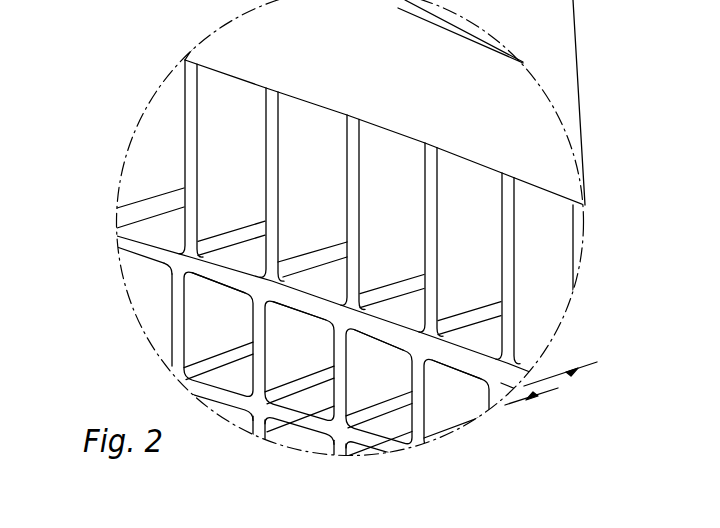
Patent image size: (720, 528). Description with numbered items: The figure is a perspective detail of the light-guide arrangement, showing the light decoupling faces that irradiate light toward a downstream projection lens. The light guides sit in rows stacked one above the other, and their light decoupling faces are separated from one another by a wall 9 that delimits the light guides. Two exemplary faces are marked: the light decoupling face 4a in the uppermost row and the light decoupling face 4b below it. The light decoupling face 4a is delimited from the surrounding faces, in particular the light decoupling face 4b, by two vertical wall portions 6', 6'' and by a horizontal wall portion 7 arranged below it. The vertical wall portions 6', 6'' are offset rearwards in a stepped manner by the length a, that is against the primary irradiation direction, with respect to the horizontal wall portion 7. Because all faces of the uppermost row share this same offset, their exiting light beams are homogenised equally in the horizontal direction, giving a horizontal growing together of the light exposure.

The light decoupling face 4a is at (222, 108).
The light decoupling face 4b is at (203, 317).
The vertical wall portion 6' is at (153, 158).
The vertical wall portion 6'' is at (287, 159).
The horizontal wall portion 7 is at (378, 333).
The wall 9 is at (177, 268).
The length a is at (551, 383).